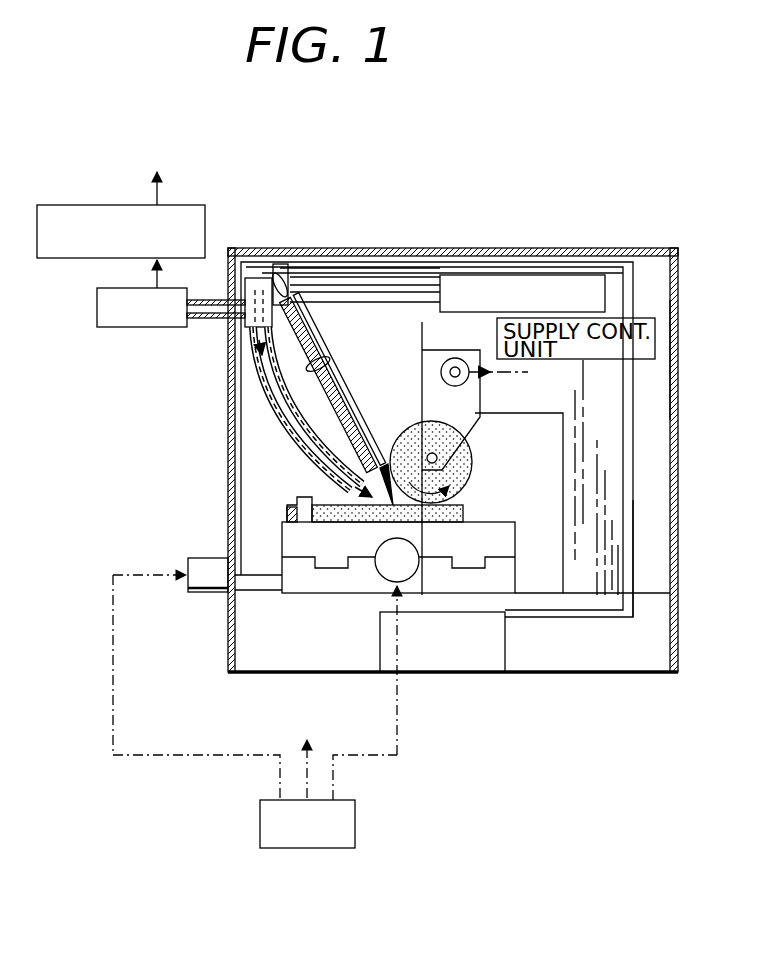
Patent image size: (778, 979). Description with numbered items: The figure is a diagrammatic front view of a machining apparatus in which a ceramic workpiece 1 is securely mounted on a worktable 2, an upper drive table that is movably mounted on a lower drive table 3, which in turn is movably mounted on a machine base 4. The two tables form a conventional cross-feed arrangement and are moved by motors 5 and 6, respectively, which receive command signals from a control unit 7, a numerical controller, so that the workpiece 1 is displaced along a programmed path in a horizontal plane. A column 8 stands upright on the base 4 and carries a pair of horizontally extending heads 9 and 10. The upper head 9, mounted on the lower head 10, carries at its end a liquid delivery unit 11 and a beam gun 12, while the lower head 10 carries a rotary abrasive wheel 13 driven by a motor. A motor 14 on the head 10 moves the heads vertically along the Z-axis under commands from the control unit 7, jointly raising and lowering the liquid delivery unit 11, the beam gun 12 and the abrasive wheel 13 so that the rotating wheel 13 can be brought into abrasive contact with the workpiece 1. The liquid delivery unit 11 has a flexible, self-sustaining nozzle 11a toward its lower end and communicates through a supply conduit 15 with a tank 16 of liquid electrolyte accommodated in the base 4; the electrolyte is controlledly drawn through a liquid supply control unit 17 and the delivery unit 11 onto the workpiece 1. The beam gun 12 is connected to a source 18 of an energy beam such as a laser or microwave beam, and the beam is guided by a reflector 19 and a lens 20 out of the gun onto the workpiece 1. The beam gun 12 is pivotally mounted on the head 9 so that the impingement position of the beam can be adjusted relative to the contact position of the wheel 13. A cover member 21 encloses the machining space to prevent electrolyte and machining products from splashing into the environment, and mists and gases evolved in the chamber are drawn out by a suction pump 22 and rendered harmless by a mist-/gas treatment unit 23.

The workpiece 1 is at (345, 506).
The worktable 2 is at (504, 528).
The lower drive table 3 is at (300, 594).
The machine base 4 is at (250, 670).
The motor 5 is at (386, 578).
The motor 6 is at (197, 557).
The control unit 7 is at (345, 832).
The column 8 is at (610, 461).
The upper head 9 is at (432, 273).
The lower head 10 is at (472, 402).
The liquid delivery unit 11 is at (243, 337).
The nozzle 11a is at (316, 455).
The beam gun 12 is at (358, 396).
The rotary abrasive wheel 13 is at (470, 458).
The motor 14 is at (441, 364).
The supply conduit 15 is at (632, 533).
The tank 16 is at (486, 672).
The liquid supply control unit 17 is at (646, 362).
The source 18 is at (560, 274).
The reflector 19 is at (288, 292).
The lens 20 is at (328, 368).
The cover member 21 is at (336, 250).
The suction pump 22 is at (97, 312).
The mist-/gas treatment unit 23 is at (106, 204).